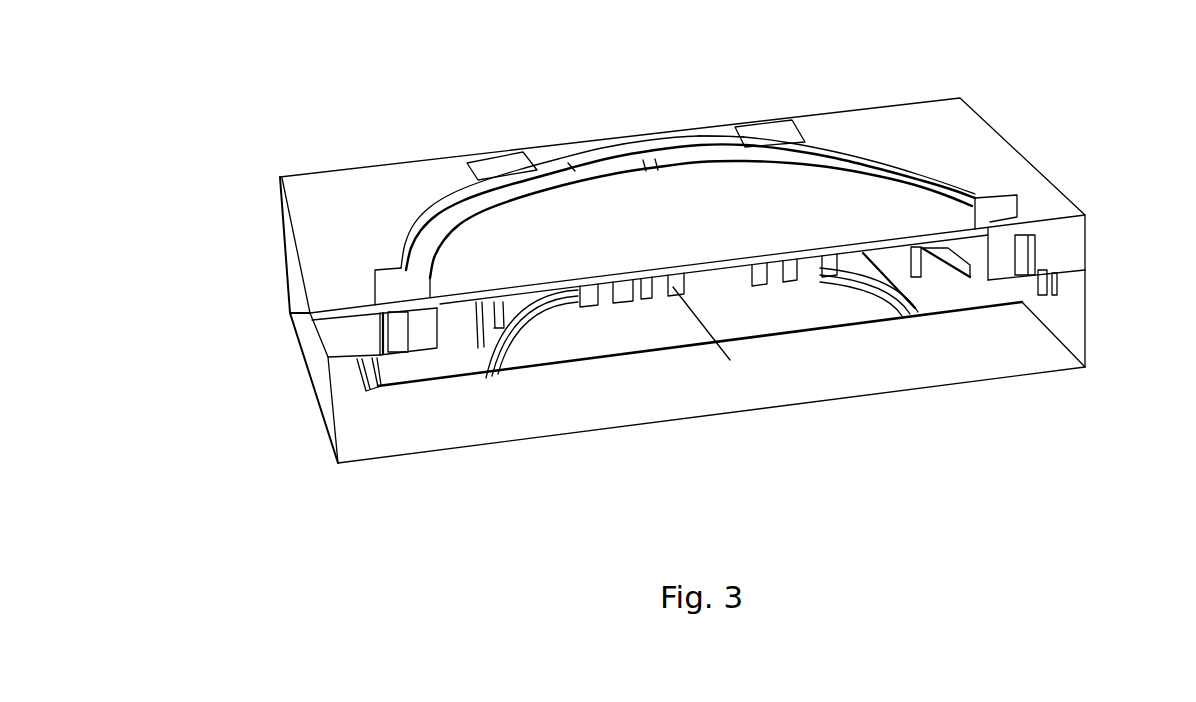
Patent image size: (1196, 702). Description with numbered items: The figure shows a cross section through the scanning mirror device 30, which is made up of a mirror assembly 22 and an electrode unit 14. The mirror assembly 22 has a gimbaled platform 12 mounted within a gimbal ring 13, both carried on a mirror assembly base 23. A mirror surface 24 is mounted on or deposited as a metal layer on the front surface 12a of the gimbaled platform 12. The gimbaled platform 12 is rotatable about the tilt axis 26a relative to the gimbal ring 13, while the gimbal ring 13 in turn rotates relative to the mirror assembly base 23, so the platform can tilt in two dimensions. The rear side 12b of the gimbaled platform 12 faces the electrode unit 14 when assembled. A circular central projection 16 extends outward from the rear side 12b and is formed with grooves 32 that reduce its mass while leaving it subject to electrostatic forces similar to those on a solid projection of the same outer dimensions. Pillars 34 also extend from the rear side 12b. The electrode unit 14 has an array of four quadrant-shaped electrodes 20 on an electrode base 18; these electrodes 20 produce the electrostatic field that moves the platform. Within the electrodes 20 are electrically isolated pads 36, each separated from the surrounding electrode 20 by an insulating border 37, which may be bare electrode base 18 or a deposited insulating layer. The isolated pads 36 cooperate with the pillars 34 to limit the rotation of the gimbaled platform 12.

The scanning mirror device 30 is at (250, 80).
The mirror assembly 22 is at (1075, 167).
The mirror assembly base 23 is at (285, 236).
The mirror surface 24 is at (715, 192).
The gimbal ring 13 is at (438, 237).
The gimbaled platform 12 is at (490, 213).
The front surface of gimbaled platform 12a is at (832, 190).
The rear side of gimbaled platform 12b is at (481, 303).
The tilt axis 26a is at (648, 165).
The electrode unit 14 is at (320, 462).
The electrode base 18 is at (845, 395).
The central projection 16 is at (606, 328).
The electrodes 20 is at (753, 318).
The insulating border 37 is at (490, 353).
The grooves 32 is at (788, 285).
The pillars 34 is at (920, 253).
The isolated pads 36 is at (915, 308).